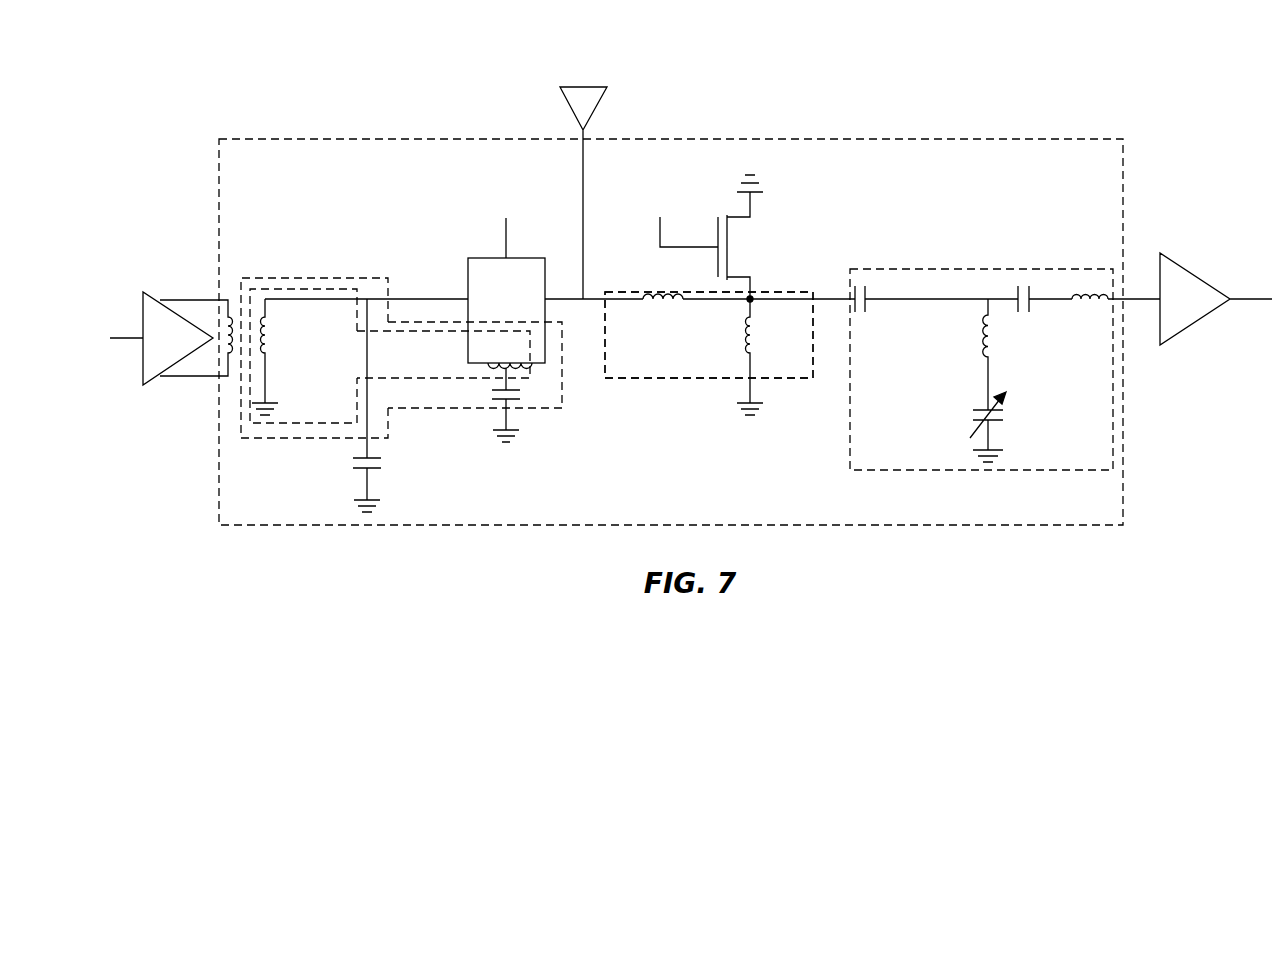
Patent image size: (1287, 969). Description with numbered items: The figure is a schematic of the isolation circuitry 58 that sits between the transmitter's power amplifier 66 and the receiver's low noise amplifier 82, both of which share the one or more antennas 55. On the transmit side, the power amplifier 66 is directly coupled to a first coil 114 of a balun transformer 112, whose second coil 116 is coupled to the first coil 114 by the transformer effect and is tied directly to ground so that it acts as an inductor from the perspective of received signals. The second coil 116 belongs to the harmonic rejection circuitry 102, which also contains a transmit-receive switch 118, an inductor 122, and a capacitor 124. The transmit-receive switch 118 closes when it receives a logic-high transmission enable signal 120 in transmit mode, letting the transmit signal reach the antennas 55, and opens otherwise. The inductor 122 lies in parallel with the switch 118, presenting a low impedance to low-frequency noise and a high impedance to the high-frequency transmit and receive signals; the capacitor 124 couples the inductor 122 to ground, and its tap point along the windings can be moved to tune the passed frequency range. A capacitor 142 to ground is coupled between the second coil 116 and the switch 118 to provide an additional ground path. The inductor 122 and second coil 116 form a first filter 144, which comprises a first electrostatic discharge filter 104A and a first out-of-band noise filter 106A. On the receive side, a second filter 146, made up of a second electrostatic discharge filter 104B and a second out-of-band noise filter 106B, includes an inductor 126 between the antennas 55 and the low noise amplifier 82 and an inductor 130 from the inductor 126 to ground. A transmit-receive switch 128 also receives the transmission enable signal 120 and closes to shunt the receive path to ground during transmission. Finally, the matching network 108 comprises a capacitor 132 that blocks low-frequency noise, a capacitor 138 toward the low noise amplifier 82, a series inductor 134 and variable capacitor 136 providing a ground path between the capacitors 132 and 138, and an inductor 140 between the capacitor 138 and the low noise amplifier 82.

The antennas 55 is at (584, 84).
The isolation circuitry 58 is at (676, 138).
The power amplifier 66 is at (142, 318).
The low noise amplifier 82 is at (1195, 276).
The harmonic rejection circuitry 102 is at (281, 277).
The first electrostatic discharge filter 104A is at (339, 332).
The first out-of-band noise filter 106A is at (322, 288).
The second electrostatic discharge filter 104B is at (744, 328).
The second out-of-band noise filter 106B is at (744, 328).
The matching network 108 is at (981, 350).
The balun transformer 112 is at (242, 317).
The first coil 114 is at (230, 352).
The second coil 116 is at (268, 343).
The transmit-receive switch 118 is at (504, 328).
The transmission enable signal 120 is at (507, 183).
The inductor 122 is at (494, 371).
The capacitor 124 is at (514, 400).
The inductor 126 is at (648, 306).
The transmit-receive switch 128 is at (716, 266).
The inductor 130 is at (757, 341).
The capacitor 132 is at (870, 291).
The inductor 134 is at (993, 345).
The variable capacitor 136 is at (995, 426).
The capacitor 138 is at (1033, 291).
The inductor 140 is at (1095, 305).
The capacitor 142 is at (357, 472).
The first filter 144 is at (392, 379).
The second filter 146 is at (704, 379).